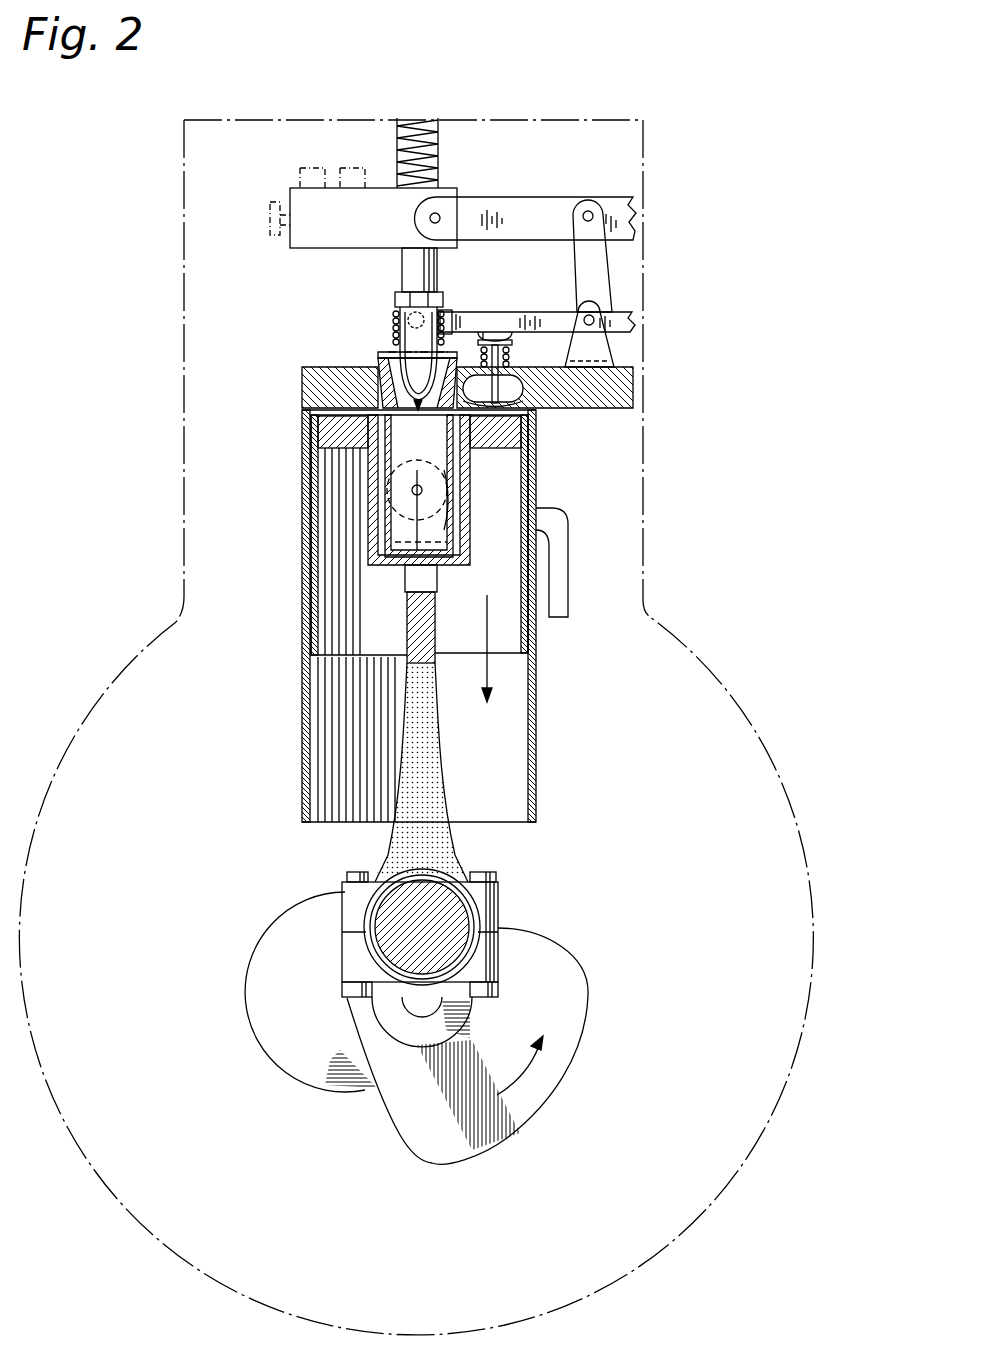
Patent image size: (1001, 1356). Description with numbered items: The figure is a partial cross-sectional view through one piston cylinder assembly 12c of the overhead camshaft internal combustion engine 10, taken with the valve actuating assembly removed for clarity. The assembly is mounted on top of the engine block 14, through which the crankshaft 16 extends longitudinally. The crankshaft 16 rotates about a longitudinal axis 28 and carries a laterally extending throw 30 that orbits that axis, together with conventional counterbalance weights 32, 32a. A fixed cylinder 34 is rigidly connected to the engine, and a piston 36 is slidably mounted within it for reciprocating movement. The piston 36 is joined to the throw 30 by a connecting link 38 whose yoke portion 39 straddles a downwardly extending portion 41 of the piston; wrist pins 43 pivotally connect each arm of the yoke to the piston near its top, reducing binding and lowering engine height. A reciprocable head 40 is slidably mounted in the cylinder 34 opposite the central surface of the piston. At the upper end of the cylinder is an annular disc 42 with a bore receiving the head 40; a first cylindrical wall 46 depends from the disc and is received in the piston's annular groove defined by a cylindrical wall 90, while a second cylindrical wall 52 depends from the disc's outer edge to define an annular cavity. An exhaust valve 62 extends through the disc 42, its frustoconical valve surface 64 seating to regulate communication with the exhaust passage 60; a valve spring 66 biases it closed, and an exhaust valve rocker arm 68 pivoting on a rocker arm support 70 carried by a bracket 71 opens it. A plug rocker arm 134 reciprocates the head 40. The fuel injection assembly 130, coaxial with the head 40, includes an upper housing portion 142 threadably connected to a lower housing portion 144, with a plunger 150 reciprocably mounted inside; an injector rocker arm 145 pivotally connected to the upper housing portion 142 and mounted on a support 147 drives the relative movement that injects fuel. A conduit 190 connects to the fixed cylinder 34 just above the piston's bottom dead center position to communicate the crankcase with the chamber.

The internal combustion engine 10 is at (648, 268).
The engine block 14 is at (778, 765).
The plunger 150 is at (438, 150).
The fuel injection assembly 130 is at (462, 188).
The upper housing portion 142 is at (312, 243).
The injector rocker arm 145 is at (546, 200).
The support 147 is at (606, 222).
The valve spring 66 is at (506, 352).
The lower housing portion 144 is at (405, 335).
The reciprocable head 40 is at (382, 352).
The exhaust valve rocker arm 68 is at (511, 314).
The plug rocker arm 134 is at (460, 313).
The exhaust valve 62 is at (483, 335).
The rocker arm support 70 is at (598, 351).
The bracket 71 is at (636, 378).
The annular disc 42 is at (512, 375).
The exhaust passage 60 is at (540, 410).
The piston cylinder assembly 12c is at (302, 705).
The second cylindrical wall 52 is at (536, 762).
The frustoconical valve surface 64 is at (526, 470).
The fixed cylinder 34 is at (300, 420).
The piston 36 is at (340, 625).
The cylindrical wall 90 is at (378, 478).
The first cylindrical wall 46 is at (460, 530).
The wrist pins 43 is at (378, 520).
The yoke portion 39 is at (410, 573).
The downwardly extending portion 41 is at (440, 566).
The conduit 190 is at (562, 600).
The connecting link 38 is at (432, 768).
The longitudinal axis 28 is at (420, 991).
The throw 30 is at (456, 911).
The crankshaft 16 is at (418, 1004).
The counterbalance weight 32a is at (307, 1057).
The counterbalance weight 32 is at (528, 1105).